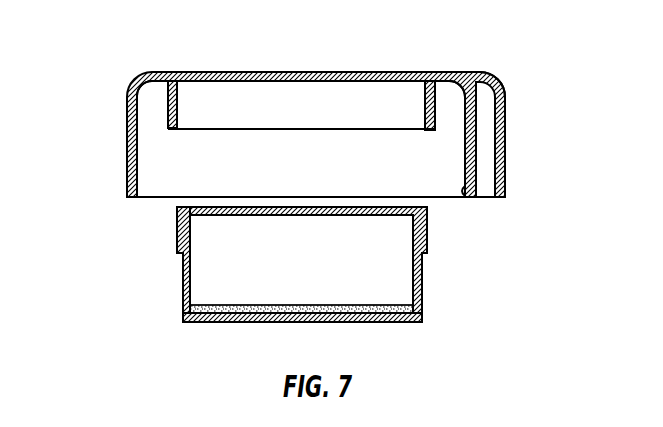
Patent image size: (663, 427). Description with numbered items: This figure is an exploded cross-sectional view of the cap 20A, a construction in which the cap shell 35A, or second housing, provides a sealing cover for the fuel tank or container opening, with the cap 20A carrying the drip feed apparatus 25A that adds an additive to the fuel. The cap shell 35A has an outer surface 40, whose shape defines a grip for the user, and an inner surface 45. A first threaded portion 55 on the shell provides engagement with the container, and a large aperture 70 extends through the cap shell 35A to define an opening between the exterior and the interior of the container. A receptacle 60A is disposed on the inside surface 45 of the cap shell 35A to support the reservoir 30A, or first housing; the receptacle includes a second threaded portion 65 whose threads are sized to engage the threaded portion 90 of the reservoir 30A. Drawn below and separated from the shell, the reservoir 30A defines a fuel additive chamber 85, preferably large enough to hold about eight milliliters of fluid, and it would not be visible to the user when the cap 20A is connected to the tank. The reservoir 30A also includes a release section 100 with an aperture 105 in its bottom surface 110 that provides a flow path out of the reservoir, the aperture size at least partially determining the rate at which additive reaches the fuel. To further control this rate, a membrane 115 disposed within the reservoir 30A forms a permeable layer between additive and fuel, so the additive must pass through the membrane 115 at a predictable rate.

The cap 20A is at (131, 27).
The top wall of closure 25A is at (487, 79).
The reservoir 30A is at (420, 312).
The cap shell 35A is at (505, 160).
The outer surface 40 is at (505, 113).
The inner surface 45 is at (460, 196).
The first threaded portion 55 is at (466, 173).
The receptacle 60A is at (168, 122).
The second threaded portion 65 is at (421, 92).
The aperture 70 is at (170, 132).
The fuel additive chamber 85 is at (418, 274).
The threaded portion 90 is at (177, 243).
The release section 100 is at (205, 298).
The aperture 105 is at (304, 323).
The bottom surface 110 is at (198, 323).
The membrane 115 is at (277, 304).